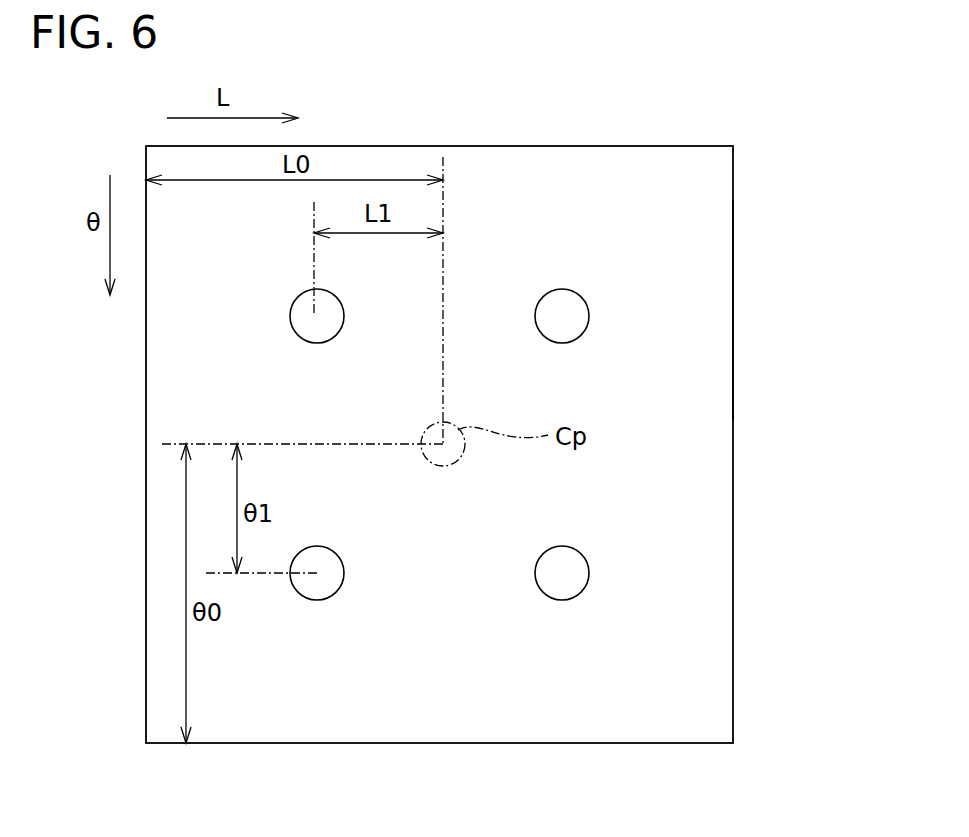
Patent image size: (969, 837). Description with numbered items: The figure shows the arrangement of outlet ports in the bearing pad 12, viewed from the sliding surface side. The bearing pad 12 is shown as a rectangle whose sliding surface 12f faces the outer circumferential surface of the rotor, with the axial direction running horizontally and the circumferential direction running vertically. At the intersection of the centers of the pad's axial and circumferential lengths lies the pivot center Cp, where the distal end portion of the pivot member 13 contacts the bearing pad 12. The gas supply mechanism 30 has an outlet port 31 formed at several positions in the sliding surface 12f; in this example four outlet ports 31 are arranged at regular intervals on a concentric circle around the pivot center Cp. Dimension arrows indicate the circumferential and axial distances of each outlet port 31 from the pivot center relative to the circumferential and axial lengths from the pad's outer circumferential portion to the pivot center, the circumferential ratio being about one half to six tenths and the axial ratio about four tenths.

The bearing pad 12 is at (733, 400).
The sliding surface 12f is at (706, 313).
The pivot member 13 is at (437, 468).
The gas supply mechanism 30 is at (578, 336).
The outlet port 31 is at (312, 339).